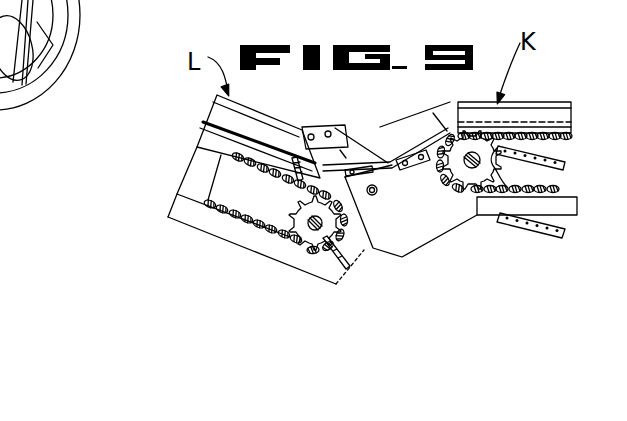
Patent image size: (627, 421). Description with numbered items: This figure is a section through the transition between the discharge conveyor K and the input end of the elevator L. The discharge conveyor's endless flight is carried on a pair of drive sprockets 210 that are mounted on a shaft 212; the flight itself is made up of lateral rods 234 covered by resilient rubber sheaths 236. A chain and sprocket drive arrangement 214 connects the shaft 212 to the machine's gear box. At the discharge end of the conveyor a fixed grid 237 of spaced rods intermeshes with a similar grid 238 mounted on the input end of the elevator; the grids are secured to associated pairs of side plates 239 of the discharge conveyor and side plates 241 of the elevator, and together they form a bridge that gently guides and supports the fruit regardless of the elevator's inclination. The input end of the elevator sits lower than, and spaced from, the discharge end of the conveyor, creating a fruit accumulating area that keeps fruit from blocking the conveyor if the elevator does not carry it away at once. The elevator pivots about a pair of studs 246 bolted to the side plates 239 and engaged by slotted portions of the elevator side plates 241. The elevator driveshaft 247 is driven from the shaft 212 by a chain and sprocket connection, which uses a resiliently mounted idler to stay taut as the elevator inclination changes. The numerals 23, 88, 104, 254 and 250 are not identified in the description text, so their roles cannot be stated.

The wheel 23 is at (68, 47).
The wheel hub 88 is at (35, 20).
The support bar 104 is at (97, 42).
The cover slats 254 is at (212, 118).
The side plates 241 is at (343, 130).
The grid 238 is at (352, 155).
The fixed grid 237 is at (409, 145).
The side plates 239 is at (400, 242).
The studs 246 is at (376, 196).
The drive sprockets 210 is at (482, 130).
The resilient rubber sheaths 236 is at (525, 130).
The shaft 212 is at (466, 163).
The lateral rods 234 is at (553, 187).
The chain and sprocket drive arrangement 214 is at (530, 222).
The driveshaft 247 is at (308, 216).
The chute plate and sprocket 250 is at (300, 229).